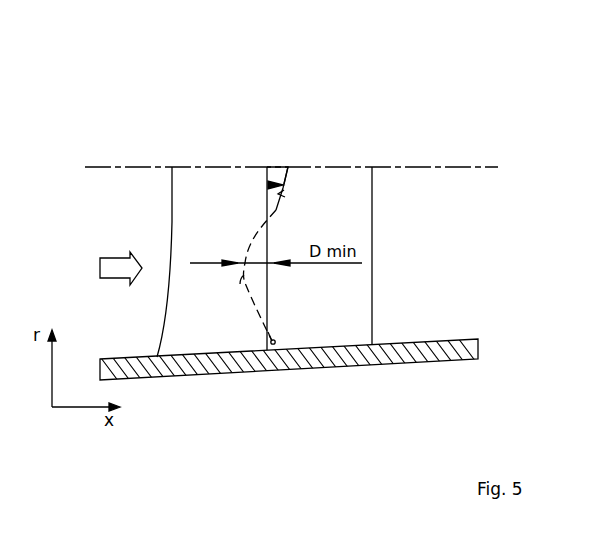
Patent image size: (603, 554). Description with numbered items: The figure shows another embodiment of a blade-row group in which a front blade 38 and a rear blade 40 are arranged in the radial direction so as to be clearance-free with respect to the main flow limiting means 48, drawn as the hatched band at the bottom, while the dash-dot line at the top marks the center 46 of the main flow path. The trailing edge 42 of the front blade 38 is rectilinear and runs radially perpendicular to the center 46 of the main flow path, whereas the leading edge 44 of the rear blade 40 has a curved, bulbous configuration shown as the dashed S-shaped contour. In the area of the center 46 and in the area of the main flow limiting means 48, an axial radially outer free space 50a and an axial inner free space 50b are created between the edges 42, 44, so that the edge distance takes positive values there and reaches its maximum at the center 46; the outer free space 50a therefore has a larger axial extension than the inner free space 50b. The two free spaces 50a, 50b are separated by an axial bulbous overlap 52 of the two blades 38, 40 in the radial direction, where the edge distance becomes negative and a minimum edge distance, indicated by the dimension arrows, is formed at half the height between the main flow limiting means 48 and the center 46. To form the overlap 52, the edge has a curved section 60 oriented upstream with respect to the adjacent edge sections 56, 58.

The front blade 38 is at (208, 182).
The rear blade 40 is at (355, 178).
The trailing edge 42 is at (270, 173).
The leading edge 44 is at (270, 185).
The center of the main flow path 46 is at (458, 165).
The main flow limiting means 48 is at (457, 347).
The axial radially outer free space 50a is at (282, 165).
The axial inner free space 50b is at (273, 343).
The axial bulbous overlap 52 is at (257, 287).
The adjacent edge section 56 is at (278, 194).
The adjacent edge section 58 is at (276, 341).
The curved section 60 is at (240, 284).